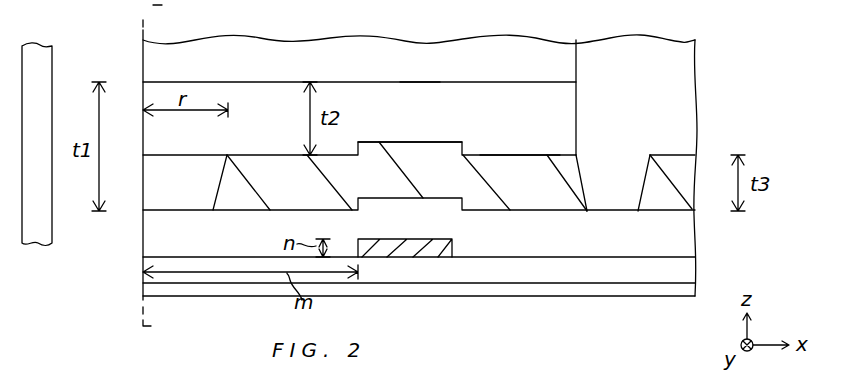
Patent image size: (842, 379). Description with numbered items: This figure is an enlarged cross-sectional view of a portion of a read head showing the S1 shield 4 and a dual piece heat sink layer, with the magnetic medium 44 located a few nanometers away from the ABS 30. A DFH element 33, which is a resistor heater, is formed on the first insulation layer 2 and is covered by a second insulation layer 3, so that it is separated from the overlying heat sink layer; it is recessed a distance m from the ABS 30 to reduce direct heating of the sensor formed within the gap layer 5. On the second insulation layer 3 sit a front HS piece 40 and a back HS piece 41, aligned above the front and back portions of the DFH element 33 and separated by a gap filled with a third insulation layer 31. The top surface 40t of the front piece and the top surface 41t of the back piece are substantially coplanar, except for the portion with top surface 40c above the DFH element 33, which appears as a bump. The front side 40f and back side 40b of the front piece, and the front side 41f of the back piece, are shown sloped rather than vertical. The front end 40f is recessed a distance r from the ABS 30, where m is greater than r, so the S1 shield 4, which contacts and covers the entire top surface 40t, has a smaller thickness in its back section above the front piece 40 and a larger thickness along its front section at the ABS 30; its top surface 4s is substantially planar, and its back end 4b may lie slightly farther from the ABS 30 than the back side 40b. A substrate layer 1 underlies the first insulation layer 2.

The substrate 1 is at (690, 288).
The first insulation layer 2 is at (690, 268).
The second insulation layer 3 is at (690, 232).
The S1 shield 4 is at (399, 86).
The top surface of the S1 shield 4s is at (420, 82).
The back end of the S1 shield 4b is at (576, 88).
The gap layer 5 is at (153, 65).
The ABS 30 is at (164, 170).
The third insulation layer 31 is at (683, 58).
The DFH element 33 is at (395, 253).
The front HS piece 40 is at (395, 171).
The front side of the front HS piece 40f is at (222, 172).
The back side of the front HS piece 40b is at (588, 192).
The top surface of the front piece portion above the DFH element 40c is at (390, 142).
The top surface of the front piece 40t is at (513, 155).
The back HS piece 41 is at (688, 144).
The front side of the back HS piece 41f is at (646, 170).
The top surface of the back piece 41t is at (668, 155).
The magnetic medium 44 is at (33, 243).